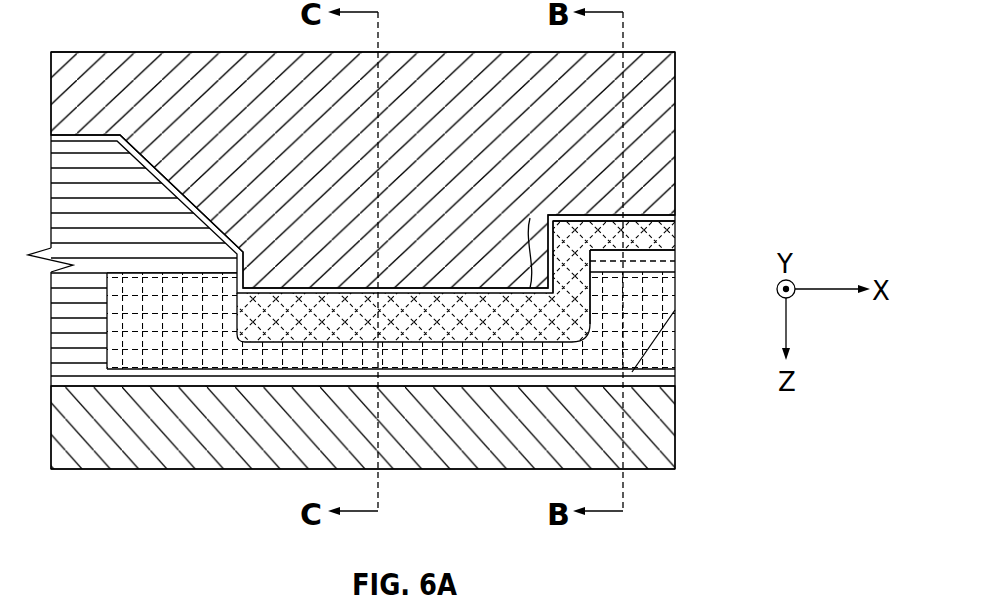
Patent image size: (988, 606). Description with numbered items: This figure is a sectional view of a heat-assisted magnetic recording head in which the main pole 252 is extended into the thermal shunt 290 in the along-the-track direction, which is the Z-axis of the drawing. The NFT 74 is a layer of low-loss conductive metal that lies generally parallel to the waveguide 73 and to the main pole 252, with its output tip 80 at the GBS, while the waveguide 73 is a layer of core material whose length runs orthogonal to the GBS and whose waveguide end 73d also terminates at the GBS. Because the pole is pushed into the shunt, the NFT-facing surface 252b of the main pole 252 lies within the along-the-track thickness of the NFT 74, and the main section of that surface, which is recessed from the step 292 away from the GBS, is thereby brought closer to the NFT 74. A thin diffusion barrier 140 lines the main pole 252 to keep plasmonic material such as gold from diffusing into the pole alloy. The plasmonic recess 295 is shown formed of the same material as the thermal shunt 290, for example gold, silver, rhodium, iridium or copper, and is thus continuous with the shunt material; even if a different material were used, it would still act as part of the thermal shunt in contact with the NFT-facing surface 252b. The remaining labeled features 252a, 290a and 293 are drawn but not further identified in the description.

The main pole 252 is at (653, 63).
The element GBS is at (675, 152).
The slider side layer 252a is at (675, 197).
The NFT-facing surface 252b is at (288, 293).
The diffusion barrier 140 is at (355, 292).
The NFT 74 is at (146, 290).
The output tip 80 is at (635, 333).
The thermal shunt 290 is at (236, 323).
The bonding material side portion 290a is at (577, 270).
The step 292 is at (527, 253).
The sidewall portion of thin film 293 is at (587, 215).
The plasmonic recess 295 is at (655, 242).
The waveguide 73 is at (578, 427).
The waveguide end 73d is at (676, 433).